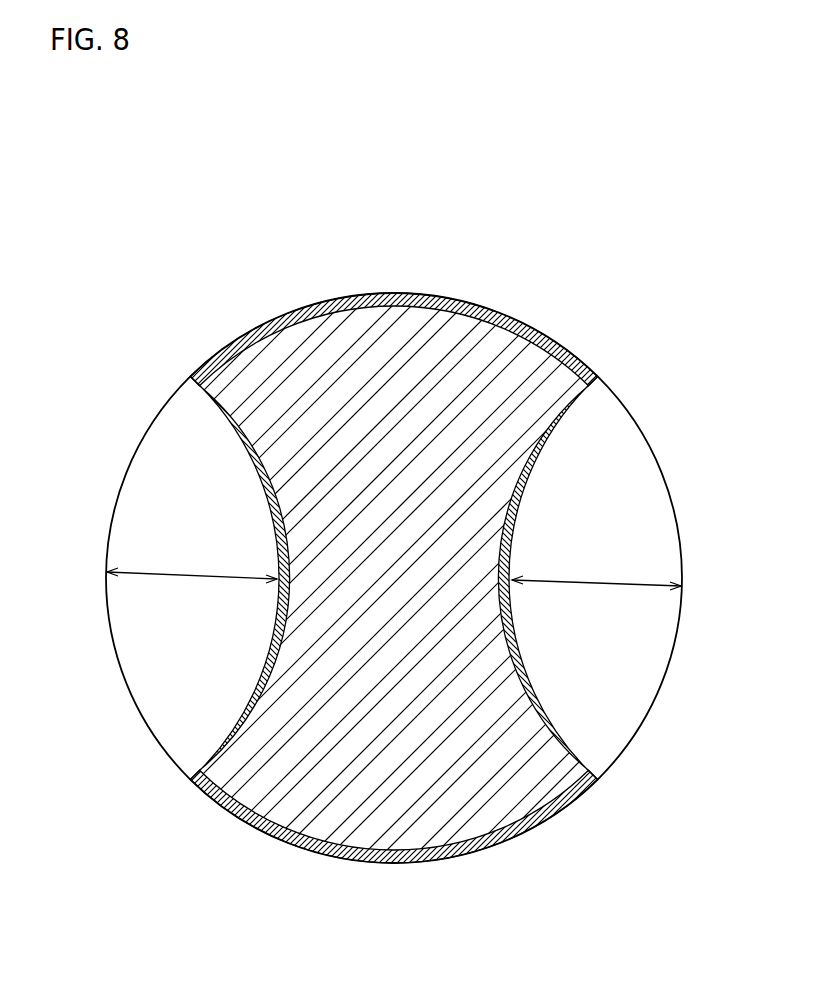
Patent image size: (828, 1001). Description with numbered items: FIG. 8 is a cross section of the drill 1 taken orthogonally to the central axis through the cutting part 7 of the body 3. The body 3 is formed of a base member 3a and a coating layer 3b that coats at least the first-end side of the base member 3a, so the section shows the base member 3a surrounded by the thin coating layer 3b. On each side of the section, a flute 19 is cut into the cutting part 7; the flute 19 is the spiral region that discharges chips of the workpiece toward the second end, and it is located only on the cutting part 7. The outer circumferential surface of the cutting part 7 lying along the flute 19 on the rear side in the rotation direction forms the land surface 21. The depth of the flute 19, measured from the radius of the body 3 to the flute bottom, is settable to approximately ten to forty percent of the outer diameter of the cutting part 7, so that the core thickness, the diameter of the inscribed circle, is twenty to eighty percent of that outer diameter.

The optical fiber preform / rod 1 is at (172, 342).
The body 3 is at (414, 500).
The base member 3a is at (428, 330).
The coating layer 3b is at (348, 297).
The cutting part 7 is at (653, 343).
The flute 19 is at (153, 485).
The land surface 21 is at (525, 327).